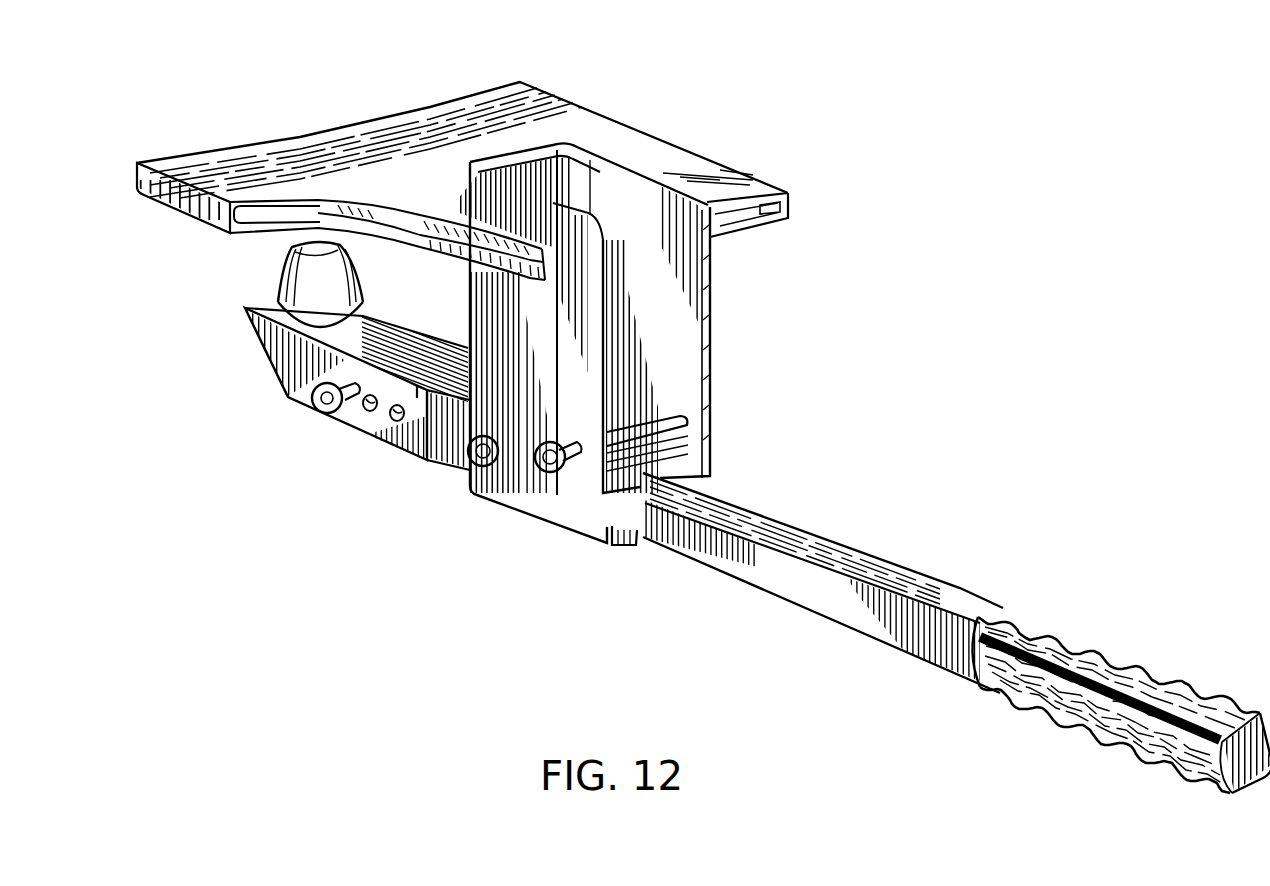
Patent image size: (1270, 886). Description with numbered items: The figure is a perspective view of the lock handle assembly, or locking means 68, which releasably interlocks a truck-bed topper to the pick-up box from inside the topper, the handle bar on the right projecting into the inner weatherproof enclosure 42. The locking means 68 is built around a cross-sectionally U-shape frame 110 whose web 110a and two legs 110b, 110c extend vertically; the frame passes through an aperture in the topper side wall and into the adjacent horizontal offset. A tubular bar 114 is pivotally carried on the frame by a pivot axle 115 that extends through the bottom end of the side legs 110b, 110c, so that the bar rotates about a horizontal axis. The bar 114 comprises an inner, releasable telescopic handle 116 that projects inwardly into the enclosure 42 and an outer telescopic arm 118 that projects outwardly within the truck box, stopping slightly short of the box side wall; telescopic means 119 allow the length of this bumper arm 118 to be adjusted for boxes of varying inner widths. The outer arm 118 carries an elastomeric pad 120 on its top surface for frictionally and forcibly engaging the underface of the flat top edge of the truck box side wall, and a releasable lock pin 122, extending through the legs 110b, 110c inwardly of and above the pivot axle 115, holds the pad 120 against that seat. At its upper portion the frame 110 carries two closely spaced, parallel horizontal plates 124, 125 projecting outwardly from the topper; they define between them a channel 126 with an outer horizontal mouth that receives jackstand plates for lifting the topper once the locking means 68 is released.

The inner weatherproof enclosure 42 is at (1121, 657).
The locking means 68 is at (821, 609).
The U-shape frame 110 is at (634, 316).
The web 110a is at (539, 158).
The leg 110b is at (680, 348).
The leg 110c is at (537, 522).
The tubular bar 114 is at (617, 541).
The pivot axle 115 is at (467, 464).
The telescopic handle 116 is at (867, 620).
The outer telescopic arm 118 is at (367, 421).
The telescopic means 119 is at (308, 410).
The elastomeric pad 120 is at (317, 281).
The releasable lock pin 122 is at (688, 418).
The horizontal plate 124 is at (415, 118).
The horizontal plate 125 is at (753, 227).
The channel 126 is at (245, 205).